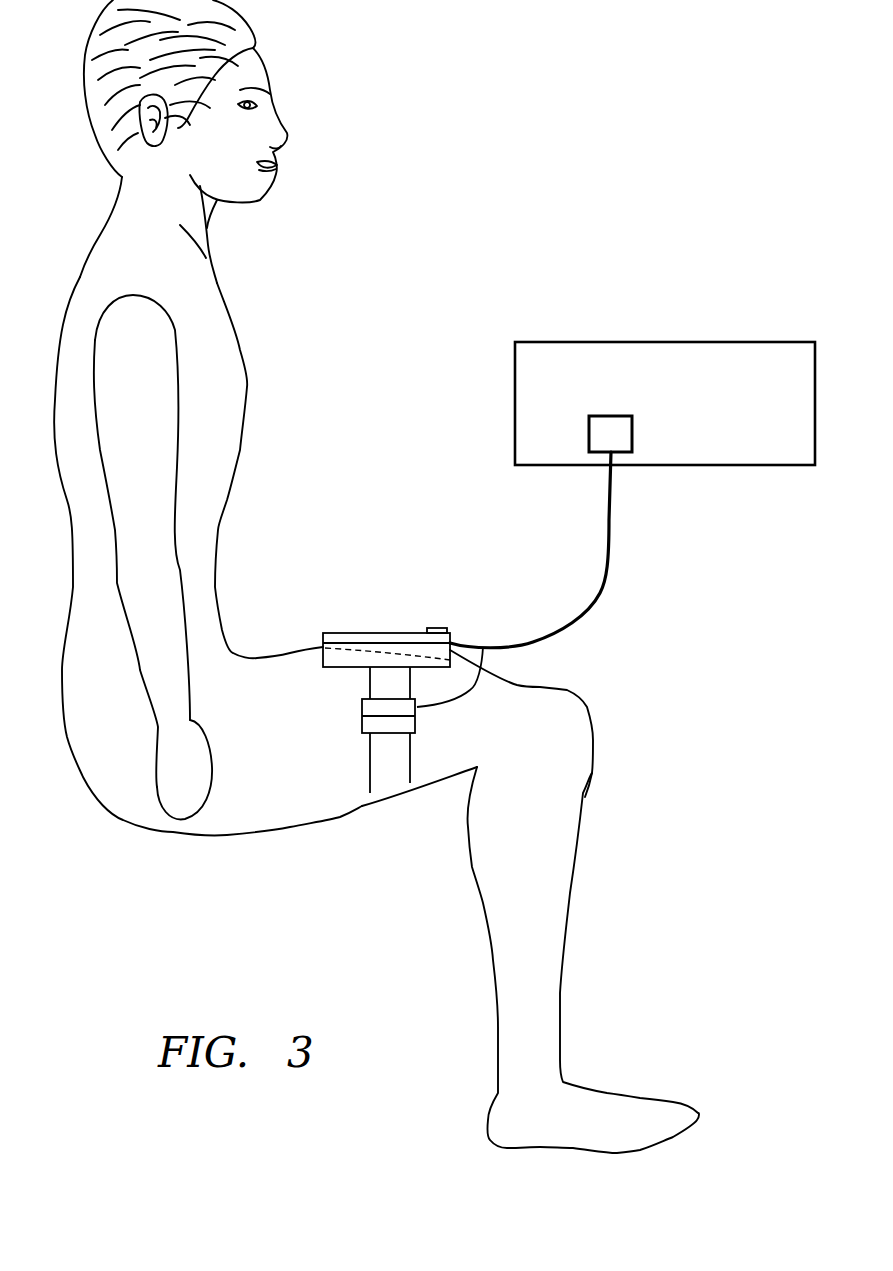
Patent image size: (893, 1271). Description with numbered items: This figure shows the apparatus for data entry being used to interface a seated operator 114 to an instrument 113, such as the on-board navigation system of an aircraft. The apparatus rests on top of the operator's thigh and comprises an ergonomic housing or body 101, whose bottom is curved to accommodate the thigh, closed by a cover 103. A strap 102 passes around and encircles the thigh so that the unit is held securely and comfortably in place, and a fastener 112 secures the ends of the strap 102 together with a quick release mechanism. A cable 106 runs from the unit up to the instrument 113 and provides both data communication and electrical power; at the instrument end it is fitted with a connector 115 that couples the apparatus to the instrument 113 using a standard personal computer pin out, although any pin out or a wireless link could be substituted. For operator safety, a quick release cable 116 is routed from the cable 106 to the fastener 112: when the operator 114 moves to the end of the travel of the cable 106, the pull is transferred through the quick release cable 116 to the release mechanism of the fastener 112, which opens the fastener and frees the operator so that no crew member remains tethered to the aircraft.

The body 101 is at (447, 690).
The strap 102 is at (366, 685).
The cover 103 is at (350, 632).
The cable 106 is at (616, 537).
The fastener 112 is at (420, 711).
The instrument 113 is at (787, 446).
The operator 114 is at (283, 363).
The connector 115 is at (585, 437).
The quick release cable 116 is at (478, 693).